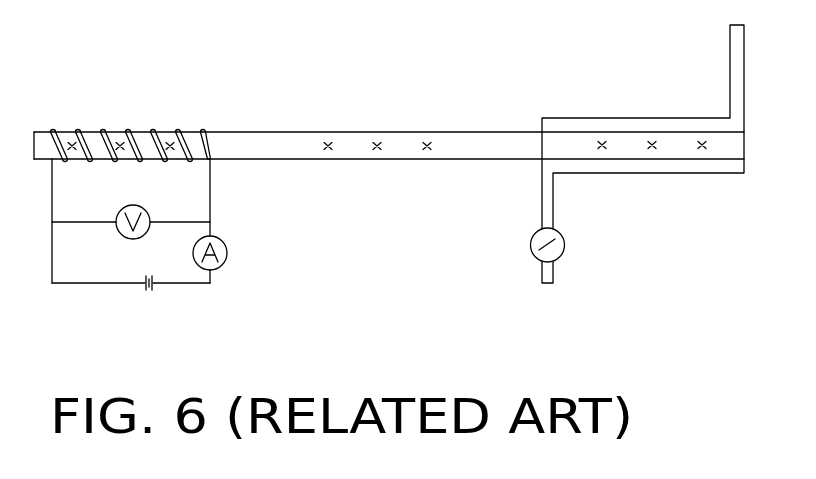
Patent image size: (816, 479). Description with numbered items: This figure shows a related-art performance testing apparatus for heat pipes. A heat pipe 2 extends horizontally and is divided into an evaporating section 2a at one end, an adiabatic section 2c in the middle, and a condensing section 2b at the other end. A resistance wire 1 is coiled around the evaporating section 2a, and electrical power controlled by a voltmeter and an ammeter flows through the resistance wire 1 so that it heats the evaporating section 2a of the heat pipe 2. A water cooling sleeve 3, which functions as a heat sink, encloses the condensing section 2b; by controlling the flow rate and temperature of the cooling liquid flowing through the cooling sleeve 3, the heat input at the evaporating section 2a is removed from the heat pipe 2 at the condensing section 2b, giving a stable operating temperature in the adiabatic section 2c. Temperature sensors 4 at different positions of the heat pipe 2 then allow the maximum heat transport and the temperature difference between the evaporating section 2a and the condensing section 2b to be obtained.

The resistance wire 1 is at (152, 131).
The heat pipe 2 is at (248, 131).
The evaporating section 2a is at (96, 140).
The condensing section 2b is at (591, 143).
The adiabatic section 2c is at (403, 143).
The water cooling sleeve 3 is at (676, 124).
The temperature sensors 4 is at (332, 142).